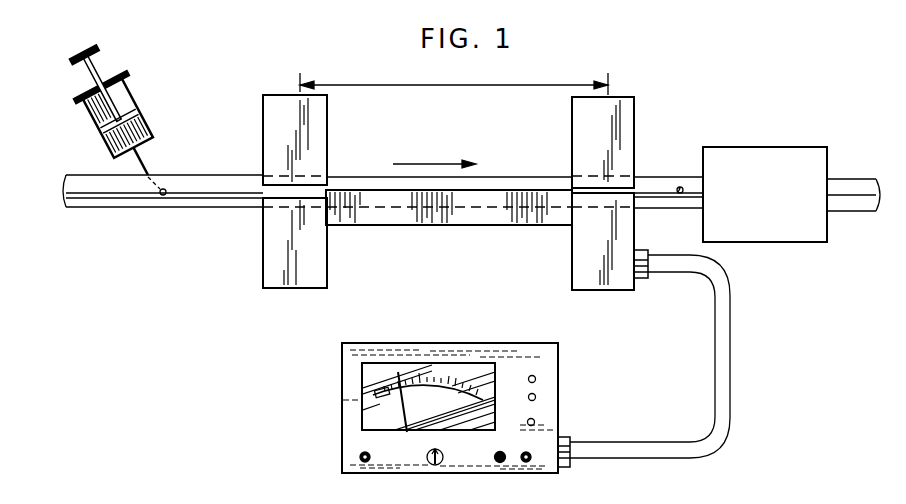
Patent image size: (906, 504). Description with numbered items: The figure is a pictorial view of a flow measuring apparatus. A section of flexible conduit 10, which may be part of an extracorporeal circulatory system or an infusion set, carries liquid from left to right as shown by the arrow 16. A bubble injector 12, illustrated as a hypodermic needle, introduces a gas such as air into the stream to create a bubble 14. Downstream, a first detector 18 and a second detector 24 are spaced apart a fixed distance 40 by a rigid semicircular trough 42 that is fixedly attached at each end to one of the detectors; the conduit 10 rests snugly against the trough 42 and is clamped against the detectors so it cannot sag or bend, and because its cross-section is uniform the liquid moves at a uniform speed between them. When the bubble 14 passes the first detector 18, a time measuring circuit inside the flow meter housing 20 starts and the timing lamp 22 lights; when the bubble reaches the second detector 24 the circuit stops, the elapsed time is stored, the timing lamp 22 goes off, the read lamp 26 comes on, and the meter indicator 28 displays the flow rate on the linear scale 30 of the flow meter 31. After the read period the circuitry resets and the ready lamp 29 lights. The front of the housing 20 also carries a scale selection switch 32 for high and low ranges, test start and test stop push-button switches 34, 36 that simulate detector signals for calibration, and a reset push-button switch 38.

The conduit section 10 is at (183, 175).
The bubble injector 12 is at (135, 103).
The bubble 14 is at (162, 196).
The arrow 16 is at (420, 160).
The first detector 18 is at (263, 238).
The flow meter housing 20 is at (422, 343).
The timing lamp 22 is at (536, 397).
The second detector 24 is at (572, 258).
The read lamp 26 is at (535, 422).
The meter indicator 28 is at (392, 412).
The ready lamp 29 is at (536, 379).
The linear scale 30 is at (744, 147).
The flow meter 31 is at (398, 366).
The scale selection switch 32 is at (435, 466).
The test start push-button switch 34 is at (500, 464).
The test stop push-button switch 36 is at (527, 463).
The reset push-button switch 38 is at (365, 463).
The fixed distance 40 is at (446, 87).
The rigid semicircular trough 42 is at (418, 228).